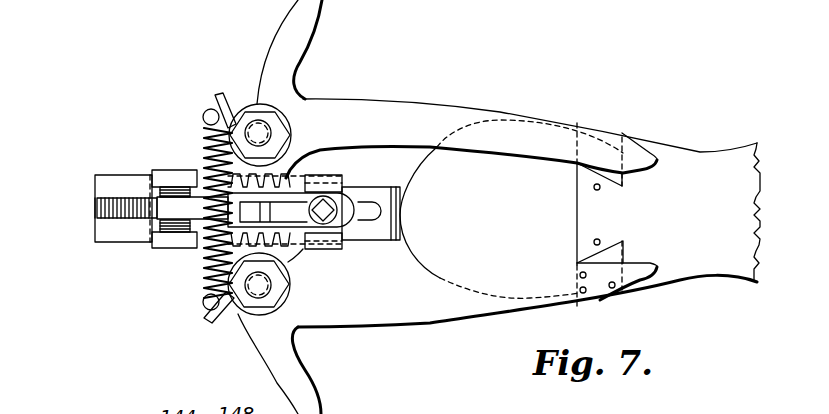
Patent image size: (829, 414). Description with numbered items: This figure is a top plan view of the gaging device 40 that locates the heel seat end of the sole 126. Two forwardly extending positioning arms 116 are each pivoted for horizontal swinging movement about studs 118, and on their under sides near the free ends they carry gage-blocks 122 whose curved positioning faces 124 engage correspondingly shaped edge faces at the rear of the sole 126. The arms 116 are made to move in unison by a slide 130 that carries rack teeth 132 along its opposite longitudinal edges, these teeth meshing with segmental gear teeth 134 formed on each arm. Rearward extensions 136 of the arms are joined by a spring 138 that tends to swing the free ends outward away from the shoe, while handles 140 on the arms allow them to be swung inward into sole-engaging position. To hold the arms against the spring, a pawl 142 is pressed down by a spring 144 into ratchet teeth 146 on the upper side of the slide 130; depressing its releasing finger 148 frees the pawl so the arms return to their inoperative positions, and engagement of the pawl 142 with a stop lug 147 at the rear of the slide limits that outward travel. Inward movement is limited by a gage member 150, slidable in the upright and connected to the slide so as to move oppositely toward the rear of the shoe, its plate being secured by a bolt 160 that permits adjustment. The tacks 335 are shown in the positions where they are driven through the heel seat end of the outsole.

The gaging device 40 is at (540, 63).
The positioning arms 116 is at (453, 112).
The studs 118 is at (258, 130).
The gage-blocks 122 is at (588, 137).
The curved positioning faces 124 is at (605, 150).
The sole 126 is at (726, 212).
The slide 130 is at (108, 233).
The rack teeth 132 is at (273, 187).
The segmental gear teeth 134 is at (258, 184).
The tacks 335 is at (594, 189).
The rearward extensions 136 is at (218, 97).
The spring 138 is at (203, 147).
The handles 140 is at (305, 25).
The pawl 142 is at (177, 210).
The spring 144 is at (173, 185).
The ratchet teeth 146 is at (97, 213).
The stop lug 147 is at (93, 202).
The releasing finger 148 is at (213, 208).
The gage member 150 is at (368, 240).
The bolt 160 is at (323, 213).